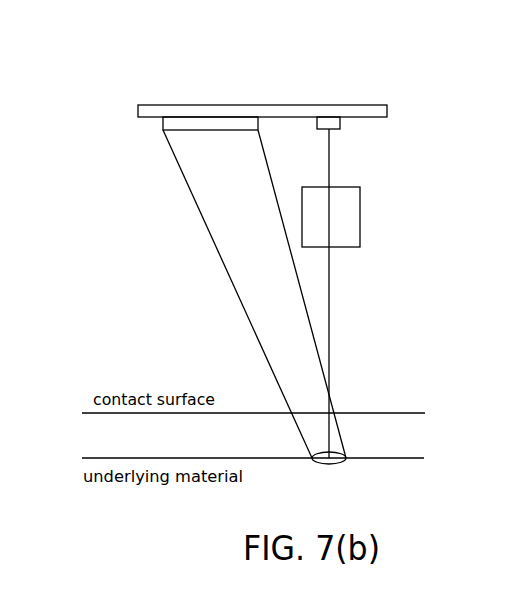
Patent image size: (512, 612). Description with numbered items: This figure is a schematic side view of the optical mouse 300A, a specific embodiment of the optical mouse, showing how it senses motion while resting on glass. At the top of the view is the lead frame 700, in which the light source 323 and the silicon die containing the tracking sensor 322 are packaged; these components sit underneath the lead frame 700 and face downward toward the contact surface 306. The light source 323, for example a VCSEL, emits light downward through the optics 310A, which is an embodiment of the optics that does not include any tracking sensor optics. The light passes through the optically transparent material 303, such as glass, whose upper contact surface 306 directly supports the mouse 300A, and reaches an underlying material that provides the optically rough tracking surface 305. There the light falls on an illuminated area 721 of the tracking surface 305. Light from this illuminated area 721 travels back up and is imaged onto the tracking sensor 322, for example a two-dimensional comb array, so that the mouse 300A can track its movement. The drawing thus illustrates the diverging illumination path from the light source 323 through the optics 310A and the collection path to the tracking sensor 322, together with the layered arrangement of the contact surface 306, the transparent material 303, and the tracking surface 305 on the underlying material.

The optical mouse 300A is at (226, 68).
The lead frame 700 is at (285, 105).
The tracking sensor 322 is at (153, 133).
The light source 323 is at (343, 133).
The optics 310A is at (360, 213).
The illuminated area 721 is at (333, 464).
The contact surface 306 is at (385, 413).
The tracking surface 305 is at (404, 458).
The optically transparent material 303 is at (280, 447).